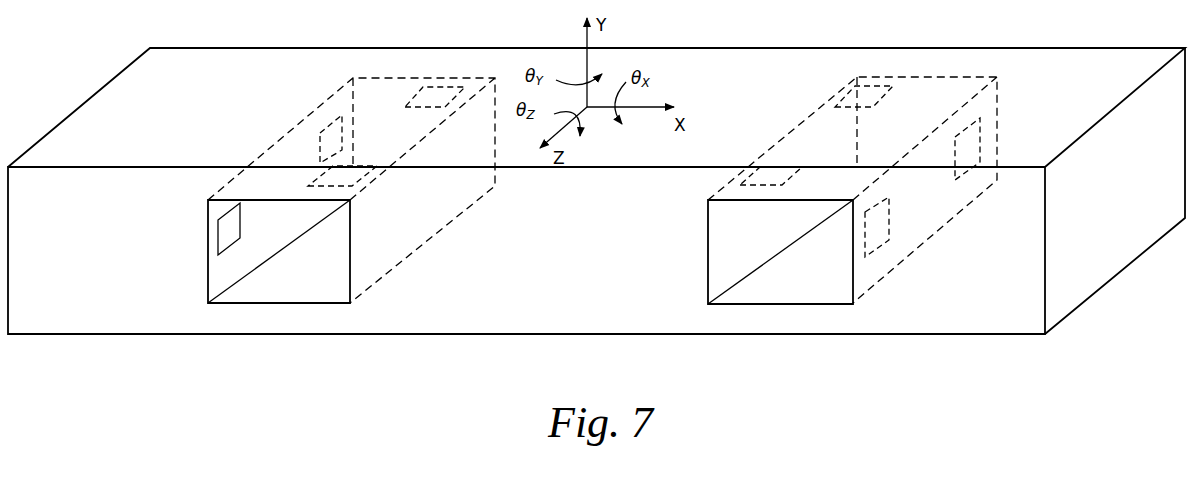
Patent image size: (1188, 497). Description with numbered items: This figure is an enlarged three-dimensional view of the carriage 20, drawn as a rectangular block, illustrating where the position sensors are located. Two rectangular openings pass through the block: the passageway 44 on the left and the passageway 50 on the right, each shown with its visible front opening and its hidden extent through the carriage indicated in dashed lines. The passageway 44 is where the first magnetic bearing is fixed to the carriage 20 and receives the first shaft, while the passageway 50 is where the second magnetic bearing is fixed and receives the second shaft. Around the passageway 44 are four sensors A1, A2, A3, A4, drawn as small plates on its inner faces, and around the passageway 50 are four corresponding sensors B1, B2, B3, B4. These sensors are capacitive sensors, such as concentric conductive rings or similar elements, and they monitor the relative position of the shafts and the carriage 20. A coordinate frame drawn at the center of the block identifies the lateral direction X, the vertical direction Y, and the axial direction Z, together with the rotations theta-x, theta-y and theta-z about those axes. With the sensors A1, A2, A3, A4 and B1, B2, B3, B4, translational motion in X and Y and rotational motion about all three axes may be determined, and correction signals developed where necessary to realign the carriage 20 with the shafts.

The carriage 20 is at (737, 48).
The passageway 44 is at (278, 305).
The passageway 50 is at (780, 305).
The sensor A1 is at (218, 238).
The sensor A2 is at (328, 122).
The sensor A3 is at (362, 182).
The sensor A4 is at (440, 88).
The sensor B1 is at (892, 210).
The sensor B2 is at (984, 125).
The sensor B3 is at (750, 187).
The sensor B4 is at (838, 93).